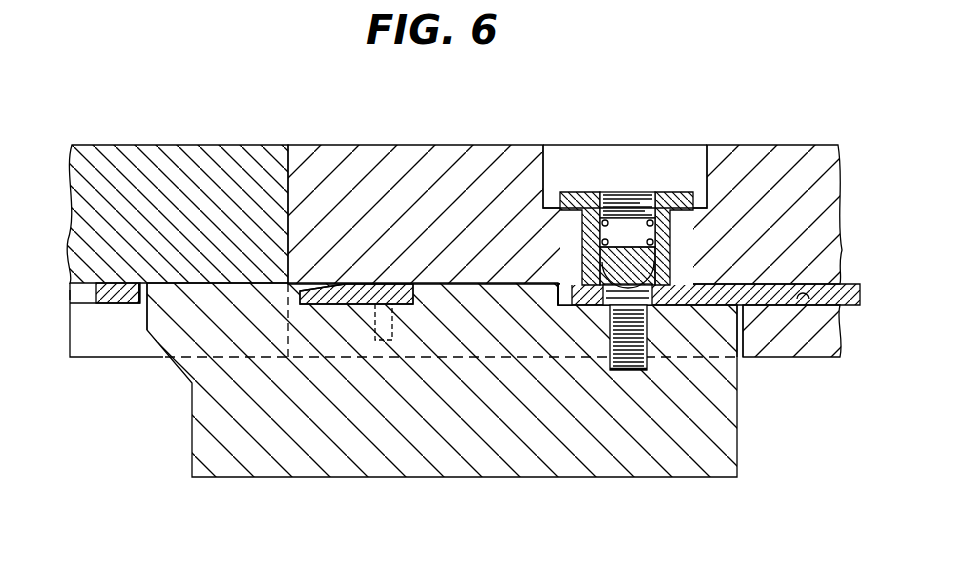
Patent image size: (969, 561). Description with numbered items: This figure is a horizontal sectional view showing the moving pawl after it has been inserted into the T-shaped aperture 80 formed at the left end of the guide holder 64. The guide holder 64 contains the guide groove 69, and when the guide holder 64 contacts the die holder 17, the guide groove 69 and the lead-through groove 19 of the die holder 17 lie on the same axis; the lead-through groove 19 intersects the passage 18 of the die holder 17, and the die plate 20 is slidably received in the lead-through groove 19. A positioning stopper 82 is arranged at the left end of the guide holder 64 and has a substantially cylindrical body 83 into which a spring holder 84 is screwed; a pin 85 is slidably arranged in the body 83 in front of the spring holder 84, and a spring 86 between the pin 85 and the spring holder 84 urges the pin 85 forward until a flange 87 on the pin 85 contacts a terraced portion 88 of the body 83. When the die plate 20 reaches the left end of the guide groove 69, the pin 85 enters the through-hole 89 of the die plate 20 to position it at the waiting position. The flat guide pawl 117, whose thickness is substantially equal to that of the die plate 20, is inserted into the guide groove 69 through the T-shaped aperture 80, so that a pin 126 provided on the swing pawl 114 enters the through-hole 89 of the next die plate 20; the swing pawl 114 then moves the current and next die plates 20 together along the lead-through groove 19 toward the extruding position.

The die holder 17 is at (213, 145).
The guide pawl 117 is at (333, 291).
The flange 87 is at (582, 245).
The body 83 is at (582, 222).
The spring holder 84 is at (612, 197).
The positioning stopper 82 is at (662, 192).
The guide holder 64 is at (767, 146).
The spring 86 is at (670, 228).
The terraced portion 88 is at (670, 242).
The pin 85 is at (670, 263).
The die plate 20 is at (118, 296).
The guide groove 69 is at (806, 300).
The T-shaped aperture 80 is at (740, 335).
The lead-through groove 19 is at (80, 300).
The passage 18 is at (135, 342).
The swing pawl 114 is at (422, 470).
The pin 126 is at (606, 308).
The through-hole 89 is at (646, 310).